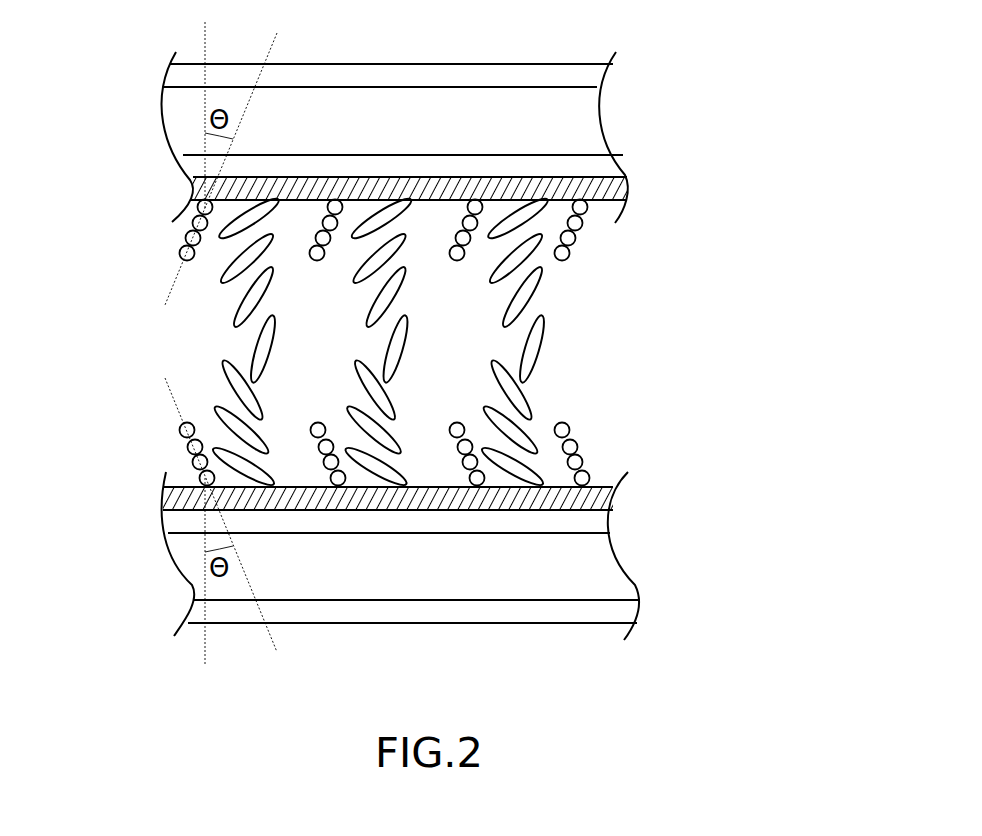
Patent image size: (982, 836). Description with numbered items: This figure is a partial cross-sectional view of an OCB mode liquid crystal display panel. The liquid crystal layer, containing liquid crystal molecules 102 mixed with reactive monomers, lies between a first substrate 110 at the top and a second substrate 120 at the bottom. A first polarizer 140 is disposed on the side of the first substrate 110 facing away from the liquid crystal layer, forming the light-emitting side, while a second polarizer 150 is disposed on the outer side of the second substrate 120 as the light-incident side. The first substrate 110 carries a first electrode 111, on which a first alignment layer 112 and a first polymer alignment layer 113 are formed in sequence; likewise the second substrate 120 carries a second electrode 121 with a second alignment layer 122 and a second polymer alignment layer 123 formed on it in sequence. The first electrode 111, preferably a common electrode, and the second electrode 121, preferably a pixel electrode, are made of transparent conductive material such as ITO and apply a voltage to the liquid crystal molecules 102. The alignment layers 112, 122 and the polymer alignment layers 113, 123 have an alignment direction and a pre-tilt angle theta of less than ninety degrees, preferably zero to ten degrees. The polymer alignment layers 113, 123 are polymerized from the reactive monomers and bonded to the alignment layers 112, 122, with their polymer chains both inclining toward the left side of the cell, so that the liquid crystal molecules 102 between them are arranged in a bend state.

The liquid crystal molecules 102 is at (244, 314).
The first substrate 110 is at (592, 113).
The first electrode 111 is at (613, 163).
The first alignment layer 112 is at (625, 192).
The first polymer alignment layer 113 is at (596, 250).
The second substrate 120 is at (598, 563).
The second electrode 121 is at (605, 517).
The second alignment layer 122 is at (610, 500).
The second polymer alignment layer 123 is at (592, 448).
The first polarizer 140 is at (607, 70).
The second polarizer 150 is at (600, 607).